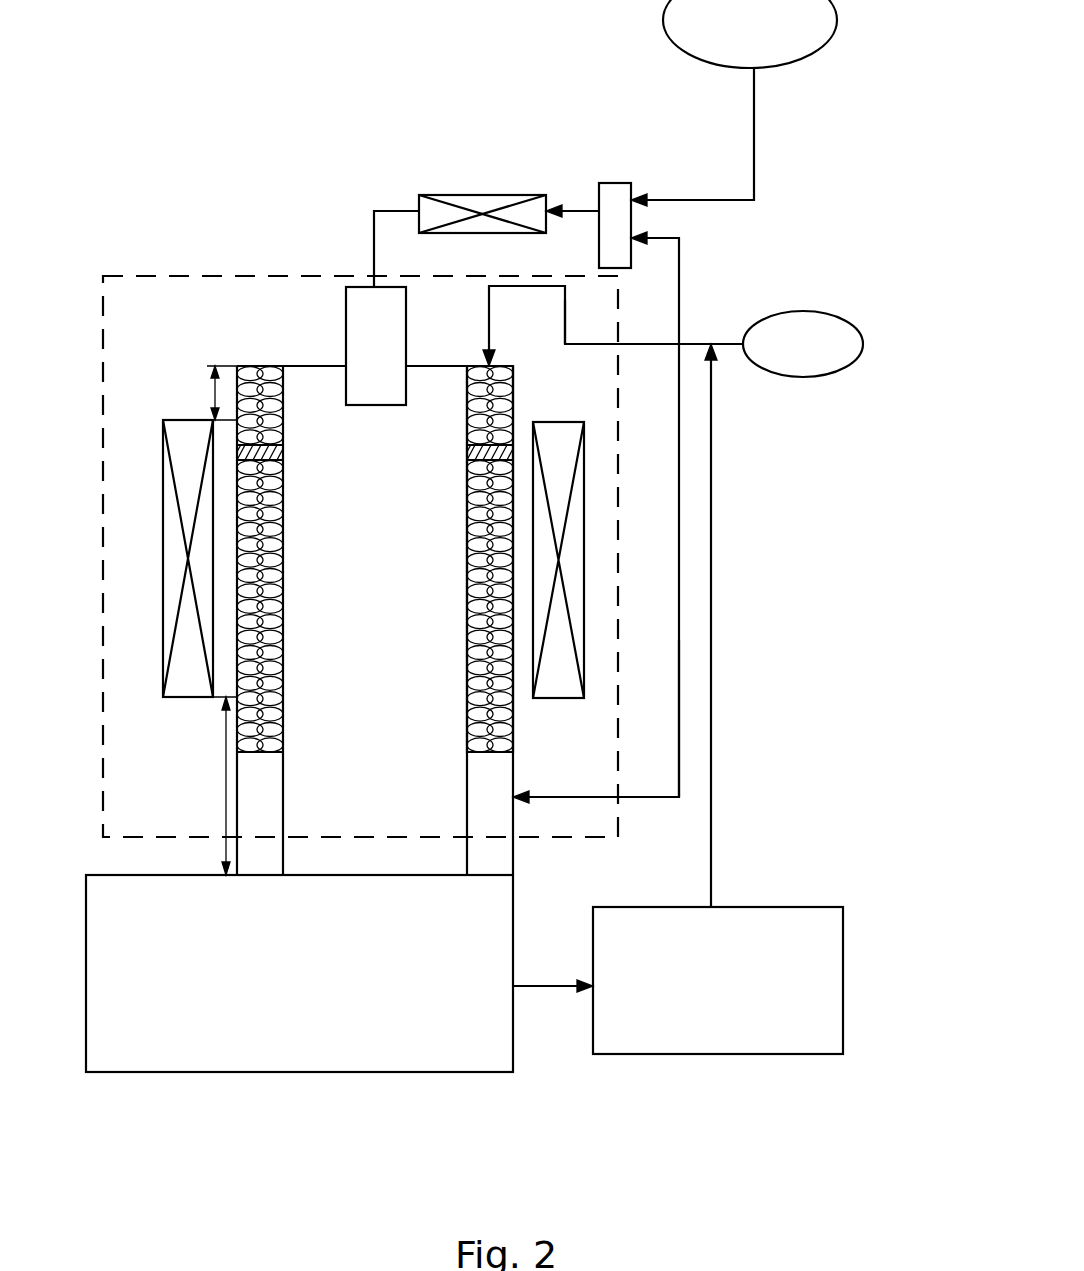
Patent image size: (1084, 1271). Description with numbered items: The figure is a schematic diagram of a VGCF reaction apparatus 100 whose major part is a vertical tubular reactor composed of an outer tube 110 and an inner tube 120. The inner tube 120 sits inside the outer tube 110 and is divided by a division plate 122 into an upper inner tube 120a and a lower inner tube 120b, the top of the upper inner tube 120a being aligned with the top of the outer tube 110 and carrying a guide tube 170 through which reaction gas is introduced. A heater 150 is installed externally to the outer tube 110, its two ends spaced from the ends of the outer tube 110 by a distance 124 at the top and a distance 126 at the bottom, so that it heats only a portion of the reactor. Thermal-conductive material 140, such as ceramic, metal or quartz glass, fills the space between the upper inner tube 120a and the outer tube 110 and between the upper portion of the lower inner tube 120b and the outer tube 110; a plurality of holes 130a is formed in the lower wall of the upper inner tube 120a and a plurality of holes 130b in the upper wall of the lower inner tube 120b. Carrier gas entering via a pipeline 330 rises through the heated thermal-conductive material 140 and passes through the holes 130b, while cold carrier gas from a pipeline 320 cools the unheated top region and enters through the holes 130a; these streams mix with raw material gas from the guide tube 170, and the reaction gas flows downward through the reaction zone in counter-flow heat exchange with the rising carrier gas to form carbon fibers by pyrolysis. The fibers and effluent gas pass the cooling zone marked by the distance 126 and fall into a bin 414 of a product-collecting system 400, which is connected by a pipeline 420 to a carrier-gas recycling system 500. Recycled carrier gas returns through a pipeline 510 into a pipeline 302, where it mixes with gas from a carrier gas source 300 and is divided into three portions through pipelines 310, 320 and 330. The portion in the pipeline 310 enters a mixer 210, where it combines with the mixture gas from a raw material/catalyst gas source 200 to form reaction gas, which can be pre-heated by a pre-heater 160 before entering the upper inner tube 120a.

The reaction apparatus 100 is at (176, 268).
The outer tube 110 is at (513, 425).
The inner tube 120 is at (408, 472).
The upper inner tube 120a is at (466, 440).
The lower inner tube 120b is at (466, 505).
The division plate 122 is at (285, 456).
The distance 124 is at (212, 392).
The distance 126 is at (225, 778).
The holes 130a is at (286, 400).
The holes 130b is at (285, 562).
The thermal-conductive material 140 is at (270, 375).
The heater 150 is at (168, 532).
The pre-heater 160 is at (484, 208).
The guide tube 170 is at (350, 294).
The raw material/catalyst gas source 200 is at (838, 26).
The mixer 210 is at (617, 185).
The carrier gas source 300 is at (864, 345).
The pipeline 302 is at (699, 344).
The pipeline 310 is at (680, 296).
The pipeline 320 is at (611, 346).
The pipeline 330 is at (679, 628).
The product-collecting system 400 is at (198, 1080).
The bin 414 is at (302, 955).
The pipeline 420 is at (557, 996).
The carrier-gas recycling system 500 is at (705, 966).
The pipeline 510 is at (712, 676).